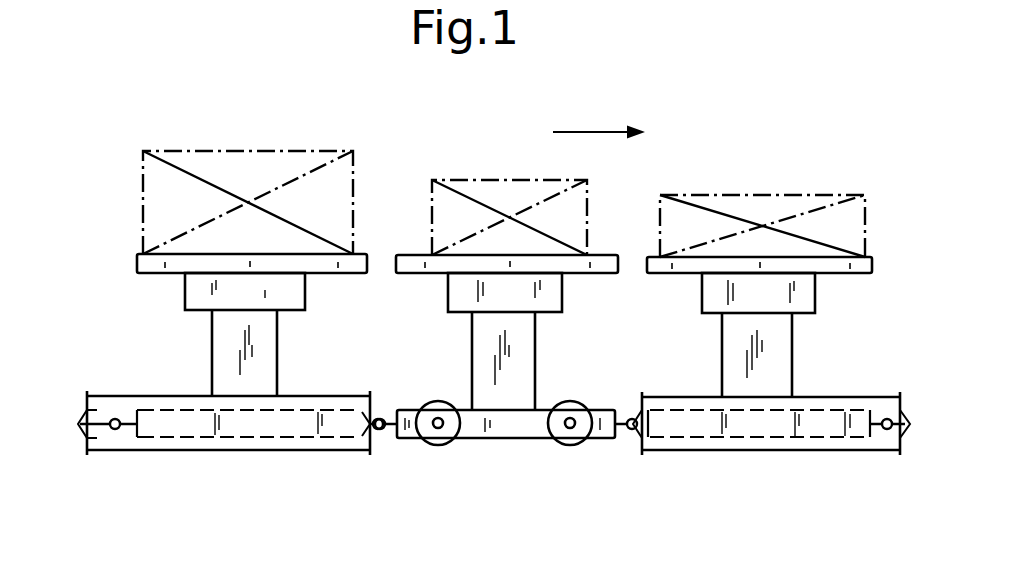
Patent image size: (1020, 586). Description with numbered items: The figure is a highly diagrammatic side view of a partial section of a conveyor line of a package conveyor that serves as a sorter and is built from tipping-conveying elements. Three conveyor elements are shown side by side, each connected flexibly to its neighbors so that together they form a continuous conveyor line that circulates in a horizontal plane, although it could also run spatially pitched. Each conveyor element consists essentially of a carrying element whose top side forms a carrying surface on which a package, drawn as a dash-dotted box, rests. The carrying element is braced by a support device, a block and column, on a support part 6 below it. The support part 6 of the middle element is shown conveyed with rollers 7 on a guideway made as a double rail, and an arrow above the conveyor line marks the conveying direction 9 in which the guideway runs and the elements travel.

The support part 6 is at (521, 430).
The rollers 7 is at (432, 432).
The conveying direction 9 is at (600, 130).